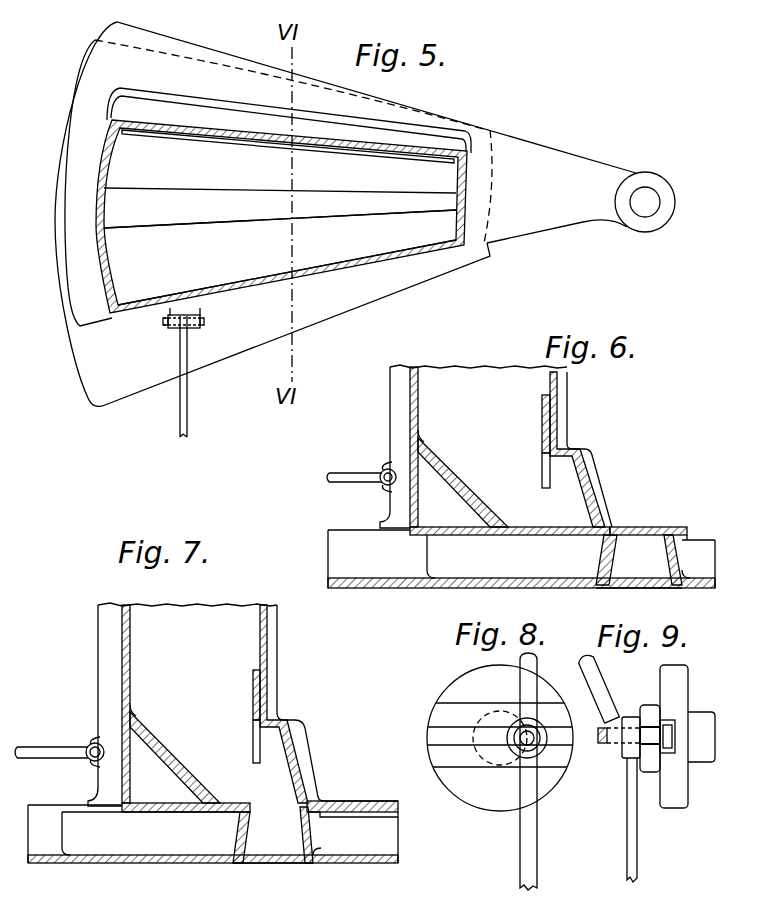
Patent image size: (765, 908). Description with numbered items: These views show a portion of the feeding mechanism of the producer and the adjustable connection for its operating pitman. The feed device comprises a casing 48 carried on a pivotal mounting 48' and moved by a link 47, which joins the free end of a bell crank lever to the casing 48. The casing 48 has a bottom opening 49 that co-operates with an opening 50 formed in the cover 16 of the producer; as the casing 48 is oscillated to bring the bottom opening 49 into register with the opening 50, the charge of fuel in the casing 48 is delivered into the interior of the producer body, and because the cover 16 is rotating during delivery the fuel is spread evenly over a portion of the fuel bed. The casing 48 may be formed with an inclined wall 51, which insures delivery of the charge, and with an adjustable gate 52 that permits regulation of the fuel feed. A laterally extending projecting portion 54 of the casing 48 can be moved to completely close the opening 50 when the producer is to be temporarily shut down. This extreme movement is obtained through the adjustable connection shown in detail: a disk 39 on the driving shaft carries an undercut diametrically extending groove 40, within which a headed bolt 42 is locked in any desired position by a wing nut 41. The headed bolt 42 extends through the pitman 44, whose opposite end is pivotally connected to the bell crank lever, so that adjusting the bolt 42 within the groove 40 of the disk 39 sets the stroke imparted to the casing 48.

In FIG. 6, the cover 16 is at (521, 559).
In FIG. 7, the cover 16 is at (400, 838).
In FIG. 8, the disk 39 is at (500, 738).
In FIG. 9, the disk 39 is at (667, 690).
In FIG. 8, the groove 40 is at (452, 737).
In FIG. 9, the groove 40 is at (637, 757).
In FIG. 8, the wing nut 41 is at (532, 686).
In FIG. 9, the wing nut 41 is at (600, 690).
In FIG. 8, the headed bolt 42 is at (522, 754).
In FIG. 9, the headed bolt 42 is at (675, 752).
In FIG. 8, the pitman 44 is at (534, 848).
In FIG. 9, the pitman 44 is at (638, 848).
In FIG. 5, the link 47 is at (180, 413).
In FIG. 6, the link 47 is at (348, 477).
In FIG. 7, the link 47 is at (42, 751).
In FIG. 5, the casing 48 is at (278, 183).
In FIG. 6, the casing 48 is at (589, 449).
In FIG. 7, the casing 48 is at (329, 704).
In FIG. 5, the pivotal mounting 48' is at (583, 194).
In FIG. 5, the bottom opening 49 is at (280, 185).
In FIG. 6, the bottom opening 49 is at (510, 524).
In FIG. 7, the bottom opening 49 is at (277, 810).
In FIG. 5, the opening 50 is at (280, 196).
In FIG. 6, the opening 50 is at (643, 561).
In FIG. 7, the opening 50 is at (277, 835).
In FIG. 5, the inclined wall 51 is at (280, 257).
In FIG. 6, the inclined wall 51 is at (470, 490).
In FIG. 7, the inclined wall 51 is at (175, 761).
In FIG. 5, the adjustable gate 52 is at (249, 144).
In FIG. 6, the adjustable gate 52 is at (543, 450).
In FIG. 7, the adjustable gate 52 is at (253, 731).
In FIG. 5, the projecting portion 54 is at (251, 346).
In FIG. 6, the projecting portion 54 is at (648, 519).
In FIG. 7, the projecting portion 54 is at (365, 805).